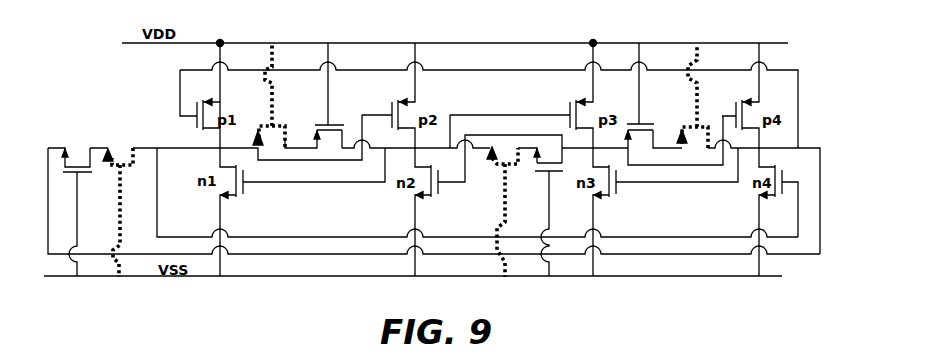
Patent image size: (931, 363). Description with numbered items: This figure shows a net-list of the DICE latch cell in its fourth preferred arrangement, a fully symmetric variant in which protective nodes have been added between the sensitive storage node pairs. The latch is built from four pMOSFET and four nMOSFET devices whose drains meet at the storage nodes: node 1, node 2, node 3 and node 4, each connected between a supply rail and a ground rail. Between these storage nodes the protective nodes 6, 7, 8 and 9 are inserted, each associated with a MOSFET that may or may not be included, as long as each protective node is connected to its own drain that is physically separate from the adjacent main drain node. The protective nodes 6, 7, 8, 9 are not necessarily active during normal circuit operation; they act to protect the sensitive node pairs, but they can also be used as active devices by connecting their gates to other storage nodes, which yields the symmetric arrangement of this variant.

The node 1 is at (234, 146).
The node 2 is at (432, 146).
The node 3 is at (615, 148).
The node 4 is at (780, 150).
The protective node 6 is at (305, 142).
The protective node 7 is at (105, 142).
The protective node 8 is at (673, 142).
The protective node 9 is at (531, 176).